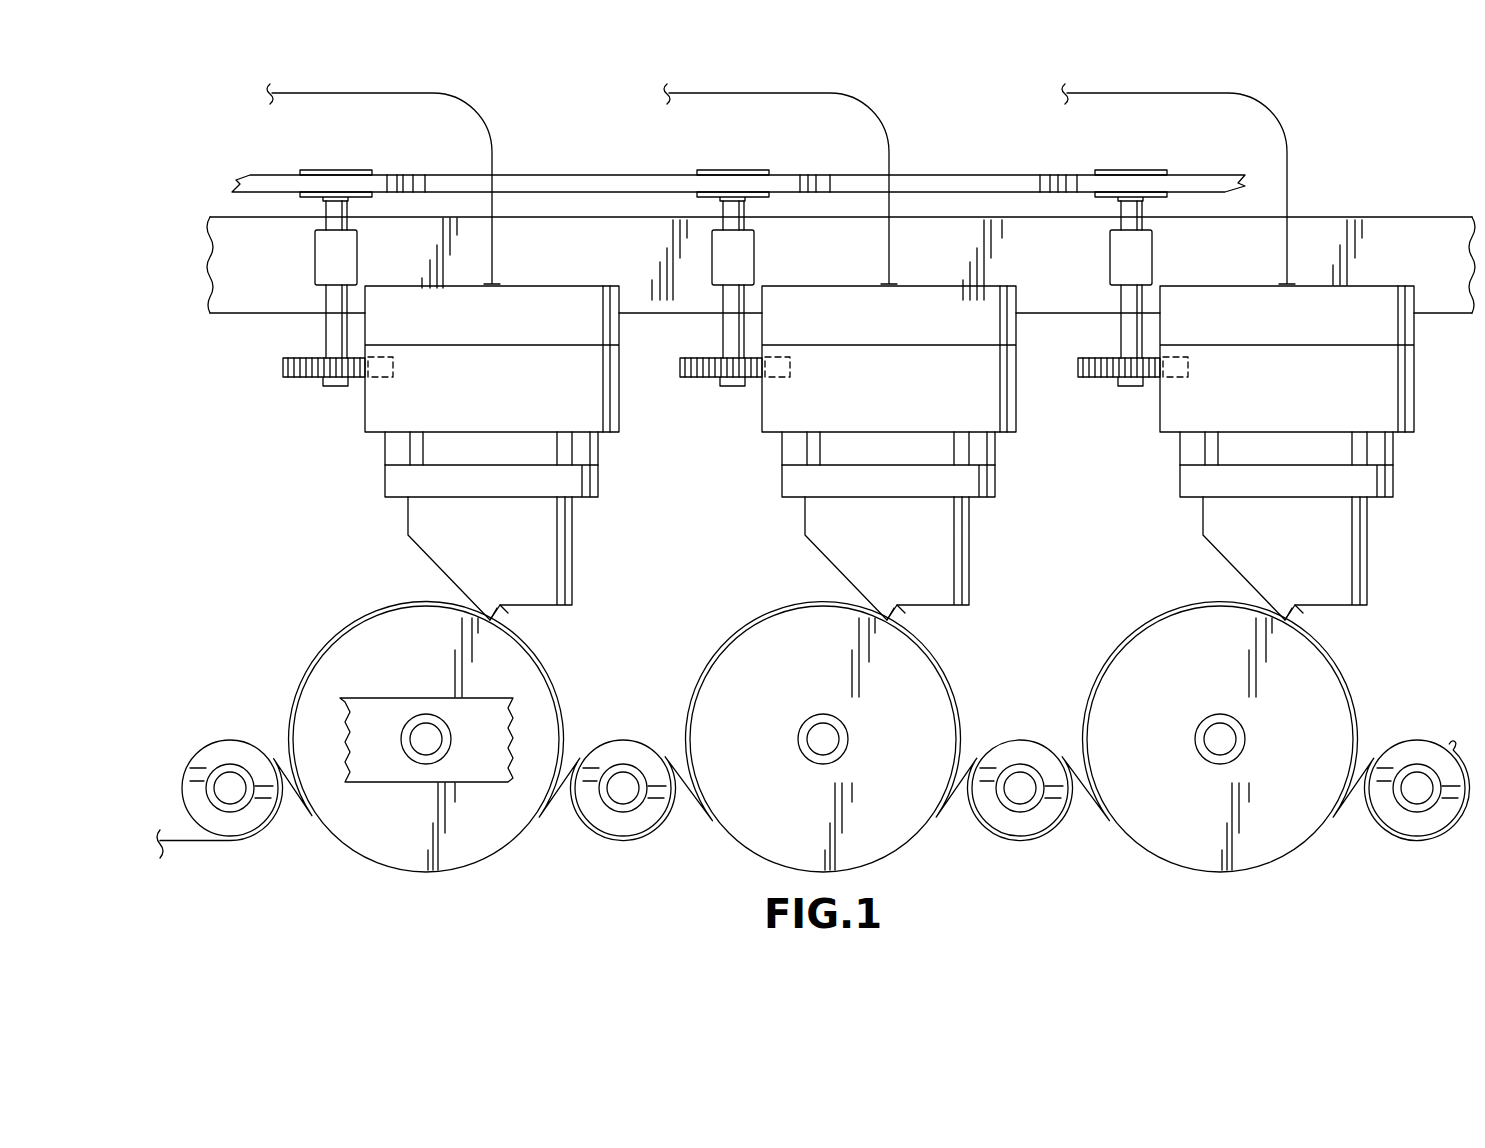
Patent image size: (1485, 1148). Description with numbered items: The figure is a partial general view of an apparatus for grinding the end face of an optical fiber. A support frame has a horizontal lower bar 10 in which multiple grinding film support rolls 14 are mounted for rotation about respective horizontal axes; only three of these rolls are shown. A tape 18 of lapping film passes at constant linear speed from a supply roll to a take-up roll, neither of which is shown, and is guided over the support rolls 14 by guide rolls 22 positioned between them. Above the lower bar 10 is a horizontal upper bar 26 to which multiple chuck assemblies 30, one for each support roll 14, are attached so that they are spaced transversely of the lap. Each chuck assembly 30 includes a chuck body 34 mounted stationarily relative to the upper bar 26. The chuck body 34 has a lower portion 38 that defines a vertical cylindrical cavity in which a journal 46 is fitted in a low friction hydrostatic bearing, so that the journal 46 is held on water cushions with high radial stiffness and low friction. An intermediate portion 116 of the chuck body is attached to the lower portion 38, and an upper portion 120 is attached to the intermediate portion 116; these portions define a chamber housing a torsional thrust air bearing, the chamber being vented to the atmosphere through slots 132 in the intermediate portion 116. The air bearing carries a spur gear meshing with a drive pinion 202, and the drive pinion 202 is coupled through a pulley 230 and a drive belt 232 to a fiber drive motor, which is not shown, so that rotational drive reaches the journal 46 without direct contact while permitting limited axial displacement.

The horizontal lower bar 10 is at (386, 770).
The grinding film support roll 14 is at (418, 873).
The tape of lapping film 18 is at (198, 856).
The guide roll 22 is at (242, 740).
The horizontal upper bar 26 is at (1403, 226).
The chuck assembly 30 is at (833, 568).
The chuck body 34 is at (494, 361).
The lower portion 38 is at (573, 582).
The journal 46 is at (498, 612).
The intermediate portion 116 is at (601, 407).
The upper portion 120 is at (578, 298).
The slots 132 is at (411, 456).
The drive pinion 202 is at (312, 358).
The pulley 230 is at (339, 170).
The drive belt 232 is at (557, 172).